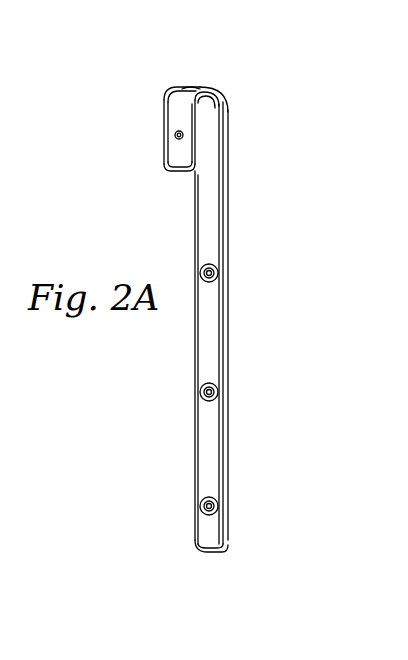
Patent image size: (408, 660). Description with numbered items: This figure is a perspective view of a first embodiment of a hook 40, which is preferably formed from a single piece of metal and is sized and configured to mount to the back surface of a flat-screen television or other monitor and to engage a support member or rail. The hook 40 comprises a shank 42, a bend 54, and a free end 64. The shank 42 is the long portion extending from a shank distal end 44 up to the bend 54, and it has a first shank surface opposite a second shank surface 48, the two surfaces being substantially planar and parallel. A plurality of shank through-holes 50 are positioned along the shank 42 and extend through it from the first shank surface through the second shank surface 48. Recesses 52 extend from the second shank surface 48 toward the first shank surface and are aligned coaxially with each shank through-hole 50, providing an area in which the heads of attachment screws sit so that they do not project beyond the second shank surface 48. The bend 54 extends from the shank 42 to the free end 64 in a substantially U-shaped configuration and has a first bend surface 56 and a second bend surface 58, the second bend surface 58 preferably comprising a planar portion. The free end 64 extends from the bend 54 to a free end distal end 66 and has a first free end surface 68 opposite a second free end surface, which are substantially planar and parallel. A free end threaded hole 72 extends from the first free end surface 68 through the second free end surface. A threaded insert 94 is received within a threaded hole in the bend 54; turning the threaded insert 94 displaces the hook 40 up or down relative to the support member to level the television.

The hook 40 is at (250, 108).
The shank 42 is at (229, 187).
The shank distal end 44 is at (200, 549).
The second shank surface 48 is at (211, 438).
The shank through-holes 50 is at (200, 393).
The recesses 52 is at (206, 384).
The bend 54 is at (173, 91).
The first bend surface 56 is at (180, 91).
The second bend surface 58 is at (217, 100).
The free end 64 is at (164, 137).
The free end distal end 66 is at (180, 173).
The first free end surface 68 is at (175, 157).
The free end threaded hole 72 is at (177, 132).
The threaded insert 94 is at (190, 87).